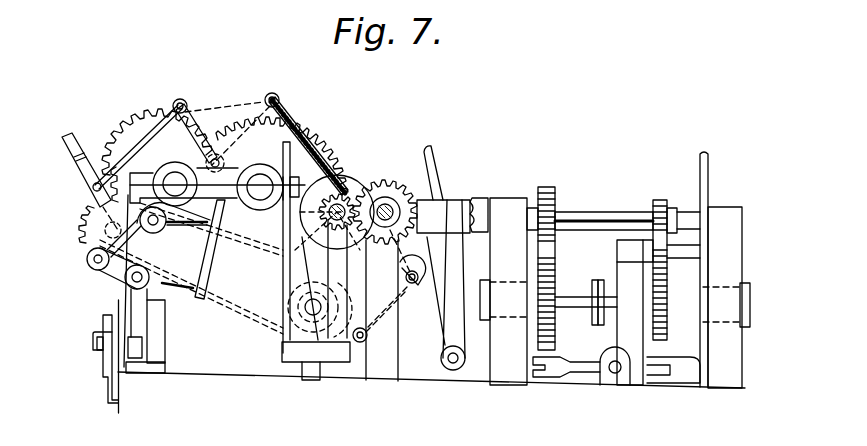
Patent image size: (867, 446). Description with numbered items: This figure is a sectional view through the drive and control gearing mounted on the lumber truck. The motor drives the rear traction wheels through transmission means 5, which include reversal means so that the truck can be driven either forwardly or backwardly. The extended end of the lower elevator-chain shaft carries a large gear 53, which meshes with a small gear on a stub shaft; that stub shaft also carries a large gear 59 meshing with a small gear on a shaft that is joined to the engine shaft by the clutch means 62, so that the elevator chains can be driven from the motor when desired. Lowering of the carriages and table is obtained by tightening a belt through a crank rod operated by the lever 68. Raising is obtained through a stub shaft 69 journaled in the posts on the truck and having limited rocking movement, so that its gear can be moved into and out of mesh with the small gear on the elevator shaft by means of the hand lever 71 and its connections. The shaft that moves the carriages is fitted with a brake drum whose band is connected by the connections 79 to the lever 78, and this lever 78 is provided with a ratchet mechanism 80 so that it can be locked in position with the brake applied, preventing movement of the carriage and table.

The large gear 53 is at (150, 117).
The connections 79 is at (187, 120).
The lever 78 is at (78, 153).
The large gear 59 is at (297, 153).
The clutch means 62 is at (343, 177).
The ratchet mechanism 80 is at (85, 232).
The stub shaft 69 is at (156, 223).
The transmission means 5 is at (614, 312).
The hand lever 71 is at (93, 342).
The lever 68 is at (130, 340).